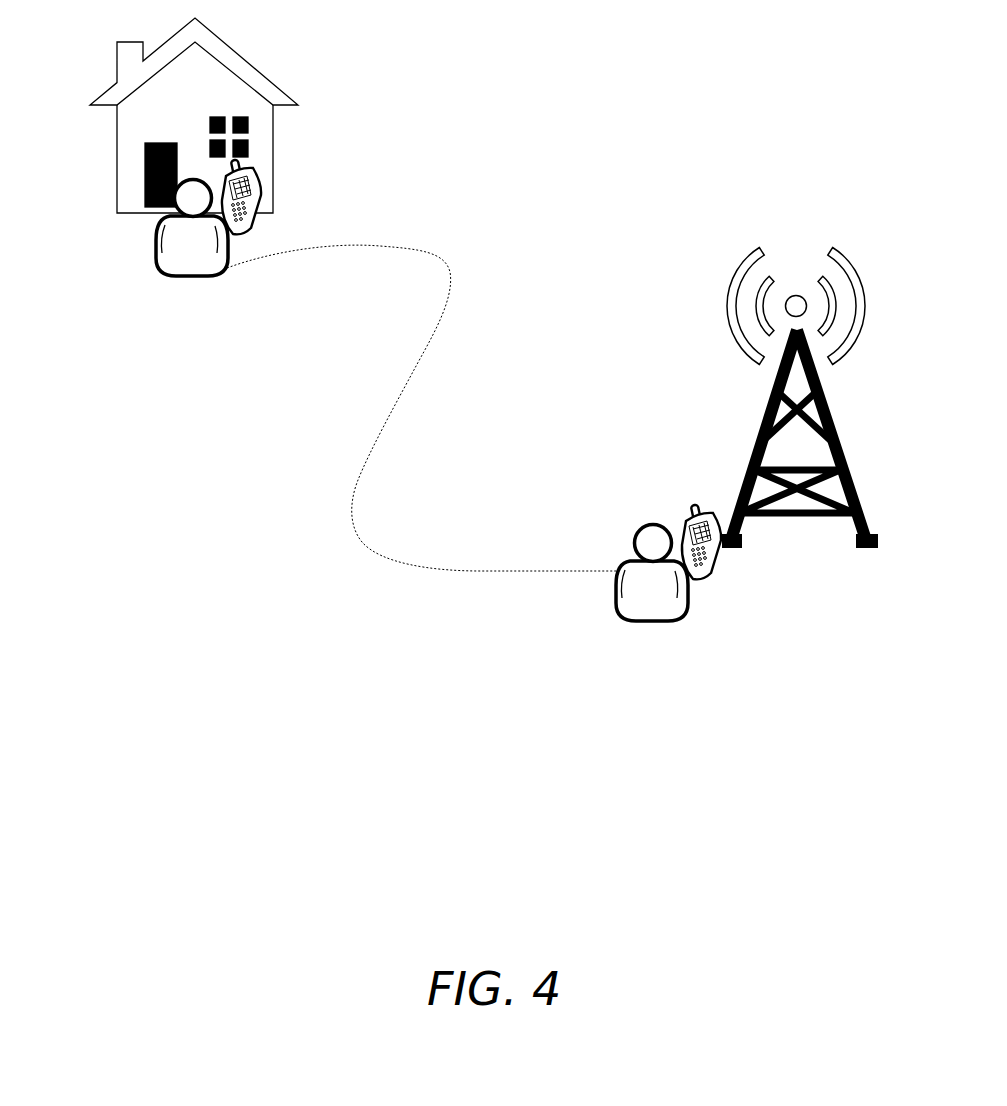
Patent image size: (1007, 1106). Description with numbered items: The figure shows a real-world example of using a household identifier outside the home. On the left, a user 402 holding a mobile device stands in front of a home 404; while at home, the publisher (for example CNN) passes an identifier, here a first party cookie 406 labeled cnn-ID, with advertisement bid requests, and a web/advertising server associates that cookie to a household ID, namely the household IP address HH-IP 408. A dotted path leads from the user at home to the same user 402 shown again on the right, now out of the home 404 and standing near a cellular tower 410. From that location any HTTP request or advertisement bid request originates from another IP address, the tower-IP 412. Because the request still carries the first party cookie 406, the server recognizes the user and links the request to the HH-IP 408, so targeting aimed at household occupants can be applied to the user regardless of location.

The user 402 is at (160, 265).
The home 404 is at (117, 142).
The 1st party cookie 406 is at (150, 333).
The HH-IP 408 is at (296, 51).
The cellular tower 410 is at (753, 440).
The tower-IP 412 is at (899, 387).